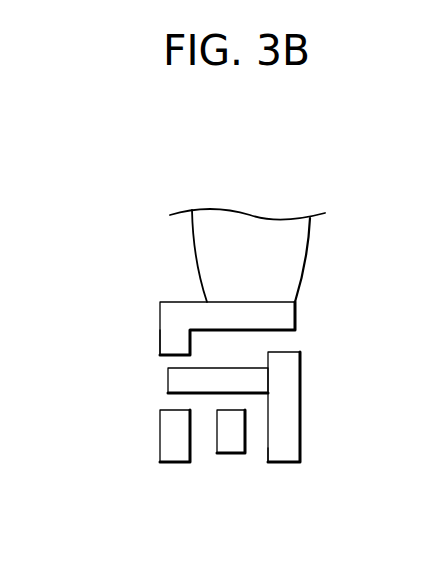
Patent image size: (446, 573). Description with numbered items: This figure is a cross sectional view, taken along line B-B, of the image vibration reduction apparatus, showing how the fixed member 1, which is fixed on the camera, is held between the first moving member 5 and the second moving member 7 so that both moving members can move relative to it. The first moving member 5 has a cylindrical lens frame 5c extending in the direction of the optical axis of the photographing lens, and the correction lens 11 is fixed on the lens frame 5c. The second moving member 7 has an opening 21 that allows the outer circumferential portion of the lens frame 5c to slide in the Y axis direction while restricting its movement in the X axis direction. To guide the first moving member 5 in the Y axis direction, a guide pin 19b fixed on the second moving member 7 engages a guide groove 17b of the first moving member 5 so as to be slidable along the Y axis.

The correction lens 11 is at (290, 252).
The lens frame 5c is at (282, 310).
The opening 21 is at (283, 352).
The guide pin 19b is at (173, 382).
The guide groove 17b is at (173, 360).
The first moving member 5 is at (172, 446).
The fixed member 1 is at (230, 443).
The second moving member 7 is at (285, 448).